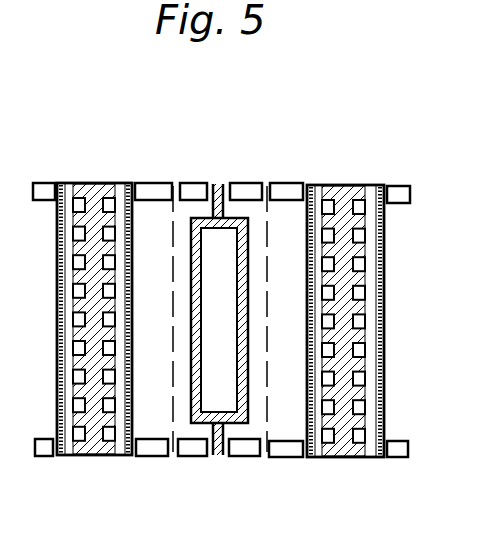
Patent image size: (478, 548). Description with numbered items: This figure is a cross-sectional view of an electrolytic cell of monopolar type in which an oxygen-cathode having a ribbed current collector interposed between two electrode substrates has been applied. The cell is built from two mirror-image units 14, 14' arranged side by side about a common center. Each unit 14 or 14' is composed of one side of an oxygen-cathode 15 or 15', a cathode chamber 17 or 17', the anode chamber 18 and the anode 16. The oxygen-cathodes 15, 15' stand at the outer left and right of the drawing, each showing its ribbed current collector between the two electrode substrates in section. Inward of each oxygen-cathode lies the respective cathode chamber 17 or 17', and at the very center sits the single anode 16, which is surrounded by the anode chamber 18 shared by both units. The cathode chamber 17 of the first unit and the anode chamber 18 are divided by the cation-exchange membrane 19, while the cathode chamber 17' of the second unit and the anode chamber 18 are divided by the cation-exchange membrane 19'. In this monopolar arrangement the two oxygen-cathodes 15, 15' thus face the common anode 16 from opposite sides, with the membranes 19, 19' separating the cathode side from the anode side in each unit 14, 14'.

The unit of the electrolytic cell 14 is at (156, 278).
The unit of the electrolytic cell 14' is at (282, 278).
The oxygen-cathode 15 is at (94, 300).
The oxygen-cathode 15' is at (345, 301).
The anode 16 is at (217, 337).
The cathode chamber 17 is at (158, 184).
The cathode chamber 17' is at (278, 186).
The anode chamber 18 is at (183, 270).
The cation-exchange membrane 19 is at (153, 453).
The cation-exchange membrane 19' is at (291, 458).